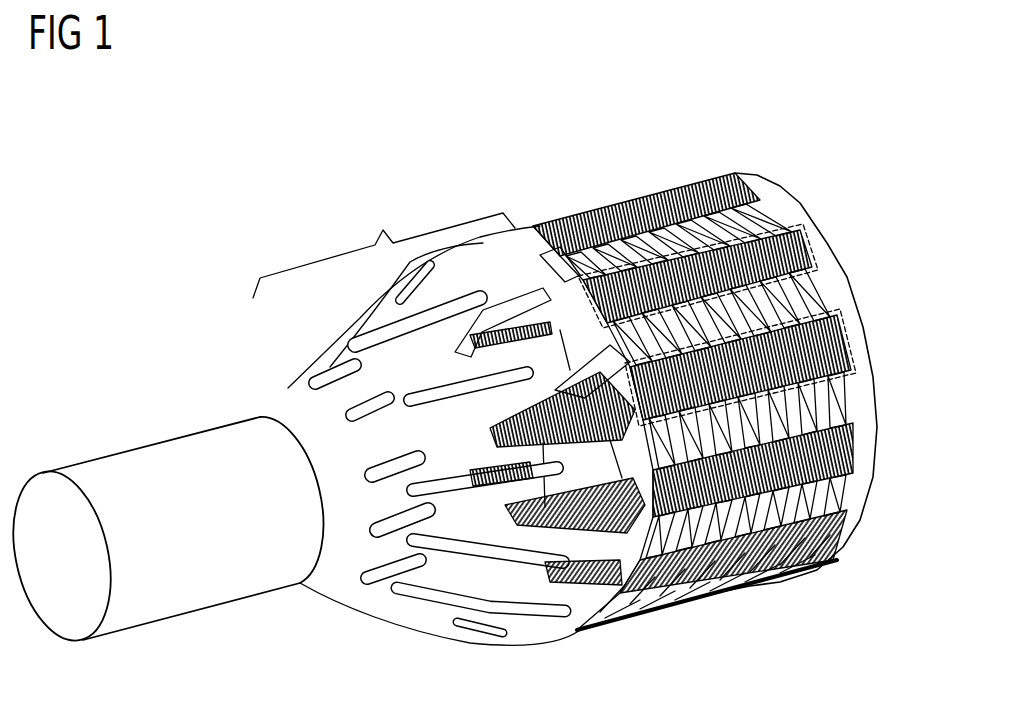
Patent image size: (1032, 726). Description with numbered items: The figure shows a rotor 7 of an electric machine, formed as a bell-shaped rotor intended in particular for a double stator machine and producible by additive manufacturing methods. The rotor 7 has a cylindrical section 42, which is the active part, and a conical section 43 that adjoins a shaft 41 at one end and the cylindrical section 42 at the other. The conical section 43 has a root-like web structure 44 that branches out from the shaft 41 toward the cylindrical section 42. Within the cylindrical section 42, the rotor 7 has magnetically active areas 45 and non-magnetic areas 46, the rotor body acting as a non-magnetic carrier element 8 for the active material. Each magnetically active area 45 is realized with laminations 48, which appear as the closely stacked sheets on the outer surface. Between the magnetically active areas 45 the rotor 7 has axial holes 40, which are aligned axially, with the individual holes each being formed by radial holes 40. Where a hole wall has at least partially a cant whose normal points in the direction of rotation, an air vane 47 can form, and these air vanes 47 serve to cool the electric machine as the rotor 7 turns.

The rotor 7 is at (104, 282).
The carrier element 8 is at (748, 188).
The axial holes 40 is at (833, 383).
The shaft 41 is at (119, 473).
The cylindrical section 42 is at (742, 167).
The conical section 43 is at (444, 387).
The web structure 44 is at (410, 560).
The magnetically active area 45 is at (800, 247).
The non-magnetic areas 46 is at (773, 210).
The air vane 47 is at (703, 547).
The laminations 48 is at (833, 430).